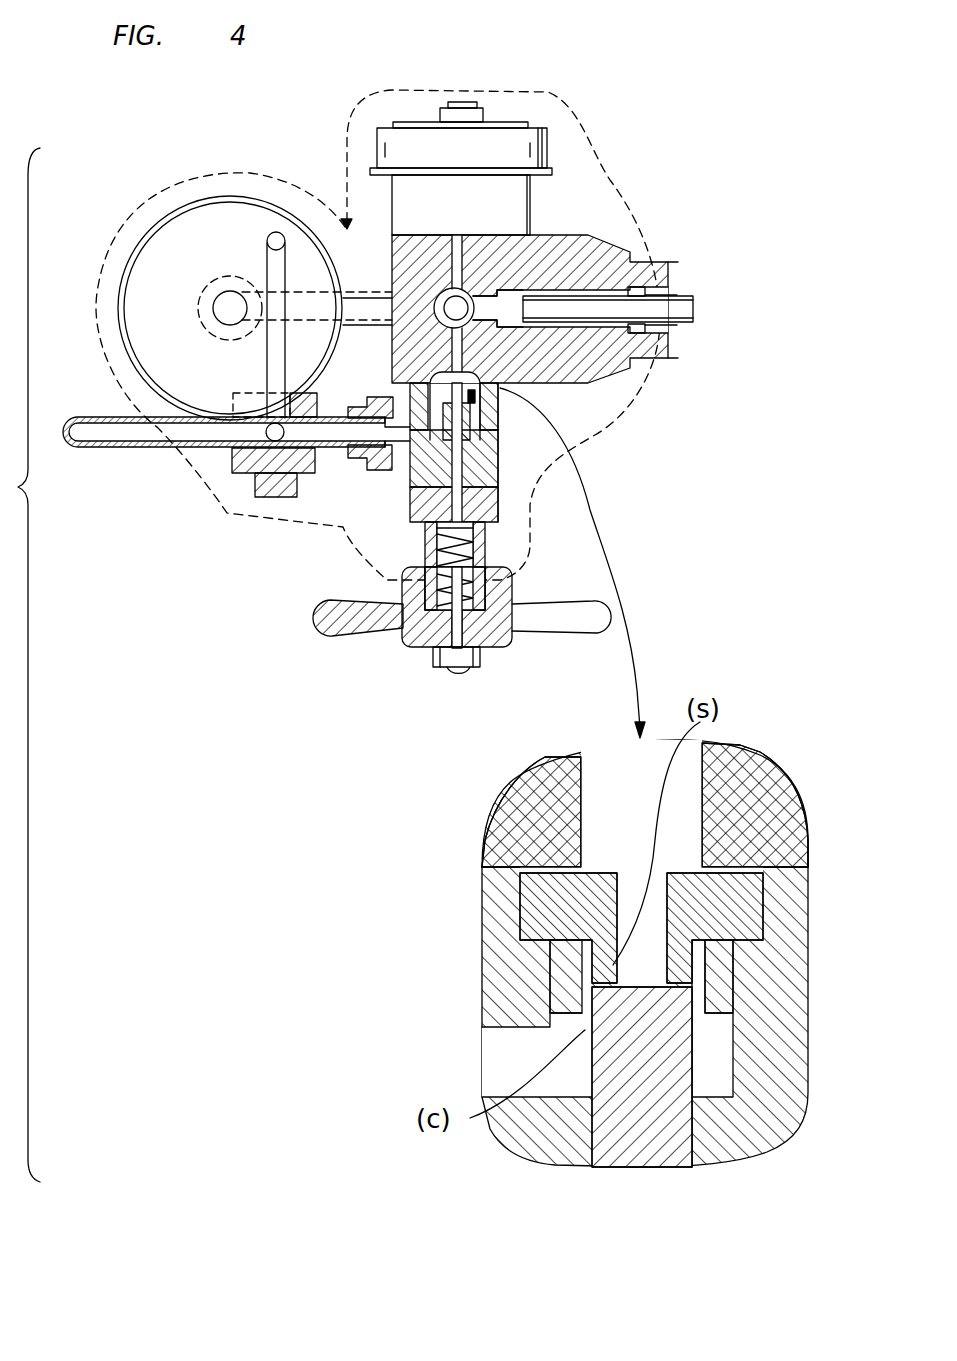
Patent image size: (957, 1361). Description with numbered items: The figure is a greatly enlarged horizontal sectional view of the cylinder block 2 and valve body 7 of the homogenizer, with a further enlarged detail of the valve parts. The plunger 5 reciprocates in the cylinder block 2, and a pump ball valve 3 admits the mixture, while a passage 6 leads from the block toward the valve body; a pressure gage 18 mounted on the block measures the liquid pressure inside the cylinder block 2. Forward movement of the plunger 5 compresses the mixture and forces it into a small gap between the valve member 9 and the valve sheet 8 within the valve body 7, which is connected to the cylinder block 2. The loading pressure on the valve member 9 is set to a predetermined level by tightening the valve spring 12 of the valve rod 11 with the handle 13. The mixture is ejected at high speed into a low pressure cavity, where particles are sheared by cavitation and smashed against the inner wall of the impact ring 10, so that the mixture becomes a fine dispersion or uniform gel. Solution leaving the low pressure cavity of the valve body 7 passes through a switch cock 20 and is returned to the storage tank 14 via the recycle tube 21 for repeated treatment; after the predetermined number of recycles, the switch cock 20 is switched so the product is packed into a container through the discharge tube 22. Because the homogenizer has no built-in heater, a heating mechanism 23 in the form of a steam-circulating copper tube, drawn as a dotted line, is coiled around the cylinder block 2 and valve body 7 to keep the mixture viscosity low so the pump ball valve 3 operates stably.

The cylinder block 2 is at (585, 262).
The pump ball valve 3 is at (463, 299).
The plunger 5 is at (582, 303).
The flow passage 6 is at (512, 302).
The valve body 7 is at (501, 388).
The valve sheet 8 is at (499, 413).
The valve member 9 is at (498, 470).
The impact ring 10 is at (498, 425).
The valve rod 11 is at (410, 508).
The valve spring 12 is at (425, 560).
The handle 13 is at (350, 637).
The storage tank 14 is at (128, 262).
The pressure gage 18 is at (376, 152).
The switch cock 20 is at (247, 475).
The recycle tube 21 is at (267, 358).
The discharge tube 22 is at (75, 417).
The heating mechanism 23 is at (440, 90).